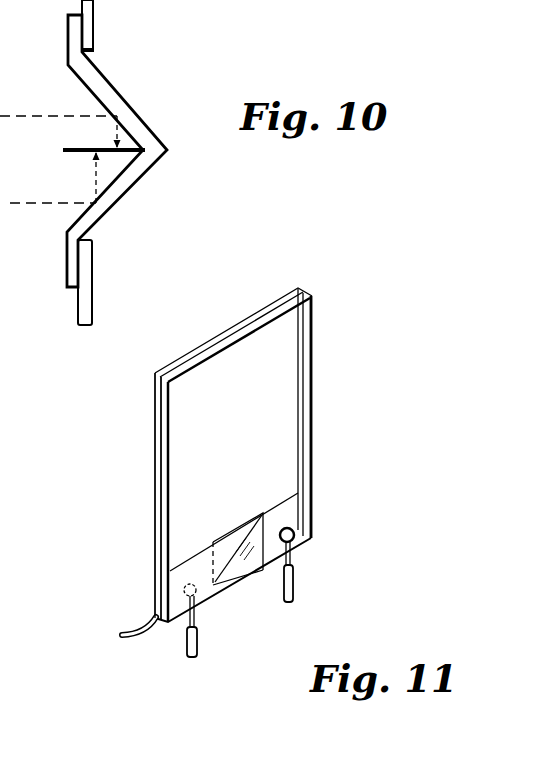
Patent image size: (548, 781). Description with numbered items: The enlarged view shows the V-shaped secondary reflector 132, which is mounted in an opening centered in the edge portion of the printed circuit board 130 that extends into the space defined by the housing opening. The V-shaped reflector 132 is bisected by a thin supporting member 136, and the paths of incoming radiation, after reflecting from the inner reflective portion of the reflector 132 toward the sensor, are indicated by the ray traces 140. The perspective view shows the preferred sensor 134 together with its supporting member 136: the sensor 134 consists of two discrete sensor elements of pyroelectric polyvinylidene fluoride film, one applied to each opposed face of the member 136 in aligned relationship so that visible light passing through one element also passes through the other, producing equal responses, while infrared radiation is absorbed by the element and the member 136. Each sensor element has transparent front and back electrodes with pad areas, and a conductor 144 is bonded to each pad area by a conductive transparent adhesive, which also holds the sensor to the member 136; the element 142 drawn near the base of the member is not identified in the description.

In FIG. 10, the bar 130 is at (94, 23).
In FIG. 10, the Z-shaped plate 132 is at (136, 110).
In FIG. 11, the panel 134 is at (287, 473).
In FIG. 10, the flange 136 is at (71, 158).
In FIG. 11, the flange 136 is at (313, 409).
In FIG. 10, the reference plane 140 is at (52, 114).
In FIG. 11, the hook clip 142 is at (165, 587).
In FIG. 11, the pin 144 is at (280, 595).